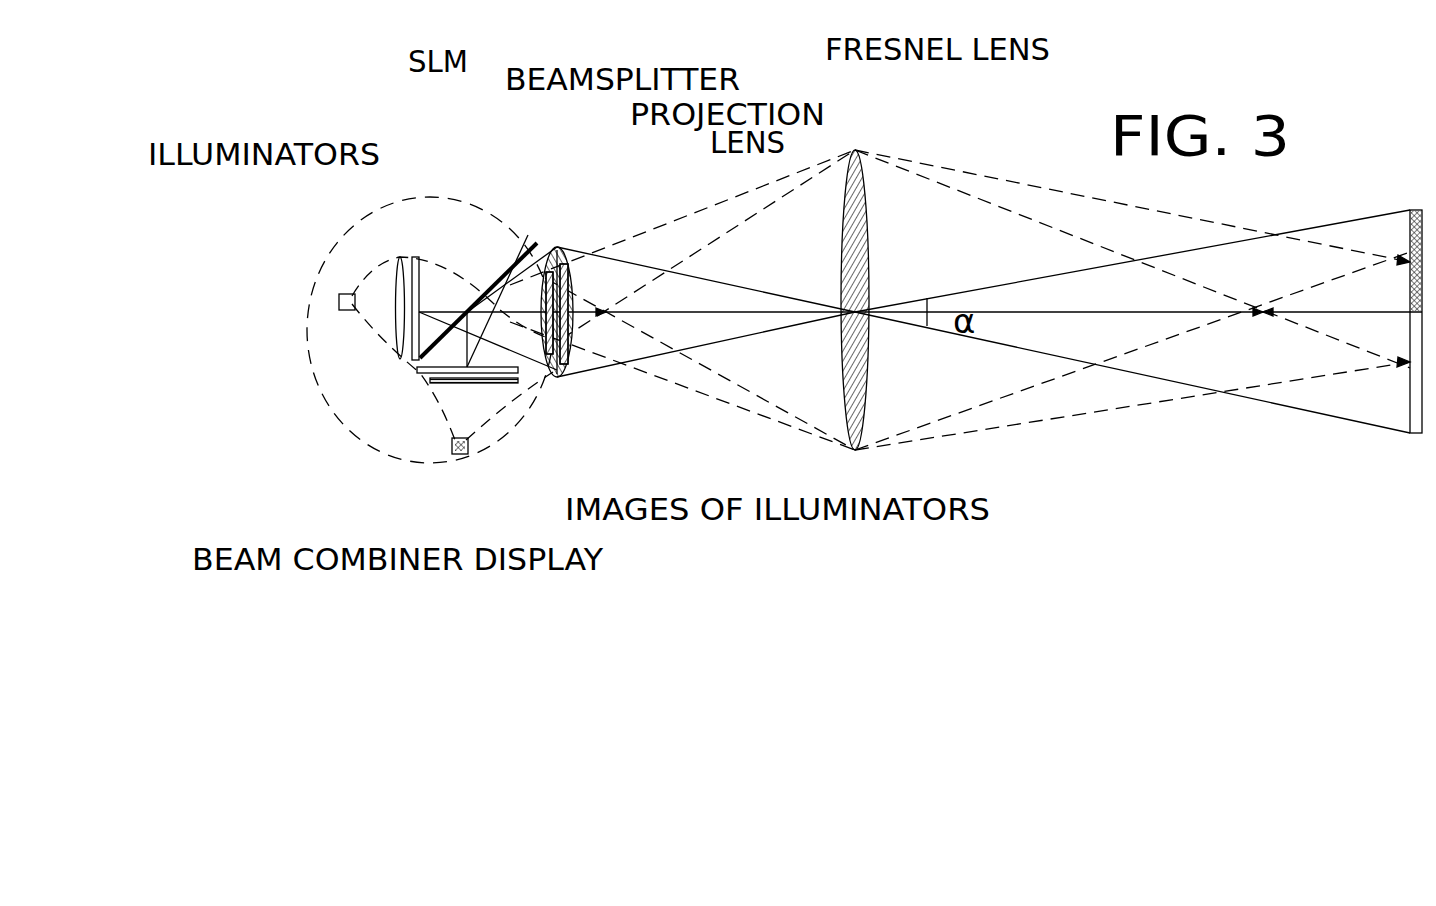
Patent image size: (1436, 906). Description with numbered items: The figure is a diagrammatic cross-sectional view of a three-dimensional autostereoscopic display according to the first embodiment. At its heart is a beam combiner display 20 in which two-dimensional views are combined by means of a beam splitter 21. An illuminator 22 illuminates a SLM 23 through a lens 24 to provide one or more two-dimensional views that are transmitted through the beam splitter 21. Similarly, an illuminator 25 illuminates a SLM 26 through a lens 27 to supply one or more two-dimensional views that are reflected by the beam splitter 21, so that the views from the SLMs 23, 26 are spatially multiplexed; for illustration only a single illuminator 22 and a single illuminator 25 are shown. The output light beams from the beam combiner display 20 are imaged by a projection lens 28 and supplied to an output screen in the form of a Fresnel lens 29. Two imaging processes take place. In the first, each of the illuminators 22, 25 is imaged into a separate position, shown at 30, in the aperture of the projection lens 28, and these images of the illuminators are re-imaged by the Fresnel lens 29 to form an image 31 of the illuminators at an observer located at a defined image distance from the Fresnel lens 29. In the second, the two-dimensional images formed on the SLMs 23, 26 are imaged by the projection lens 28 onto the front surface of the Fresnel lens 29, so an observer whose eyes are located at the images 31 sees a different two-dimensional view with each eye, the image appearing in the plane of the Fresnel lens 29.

The beam combiner display 20 is at (415, 465).
The beam splitter 21 is at (533, 242).
The illuminator 22 is at (340, 295).
The SLM 23 is at (417, 257).
The lens 24 is at (400, 257).
The illuminator 25 is at (467, 453).
The SLM 26 is at (417, 372).
The lens 27 is at (425, 381).
The projection lens 28 is at (558, 247).
The Fresnel lens 29 is at (855, 150).
The images of illuminators 30 is at (558, 372).
The image of the illuminators 31 is at (1410, 433).